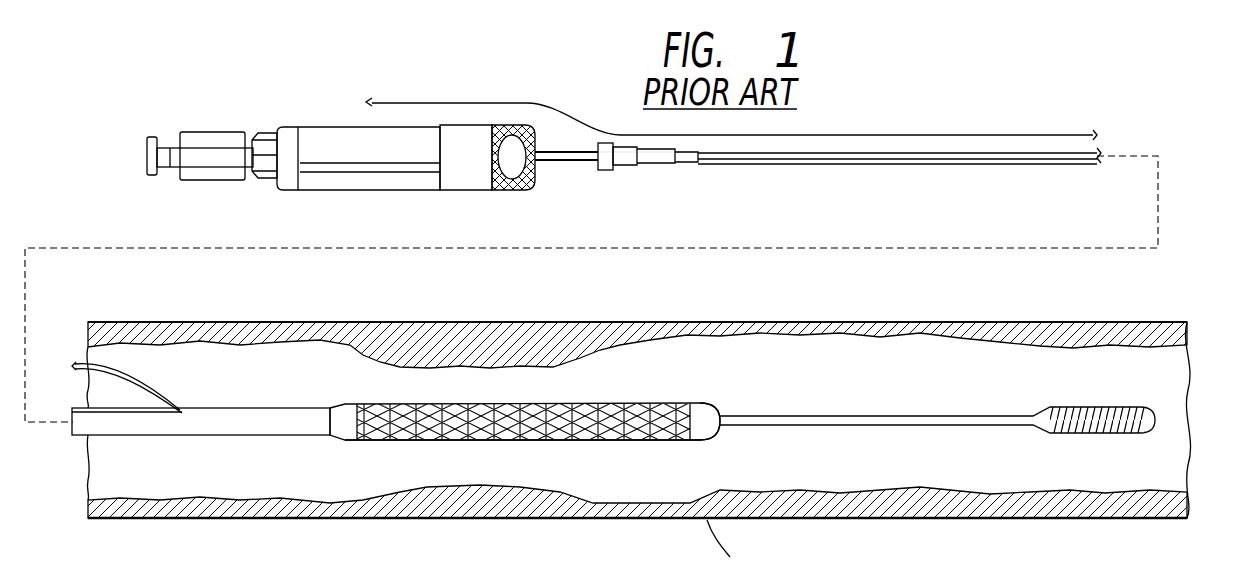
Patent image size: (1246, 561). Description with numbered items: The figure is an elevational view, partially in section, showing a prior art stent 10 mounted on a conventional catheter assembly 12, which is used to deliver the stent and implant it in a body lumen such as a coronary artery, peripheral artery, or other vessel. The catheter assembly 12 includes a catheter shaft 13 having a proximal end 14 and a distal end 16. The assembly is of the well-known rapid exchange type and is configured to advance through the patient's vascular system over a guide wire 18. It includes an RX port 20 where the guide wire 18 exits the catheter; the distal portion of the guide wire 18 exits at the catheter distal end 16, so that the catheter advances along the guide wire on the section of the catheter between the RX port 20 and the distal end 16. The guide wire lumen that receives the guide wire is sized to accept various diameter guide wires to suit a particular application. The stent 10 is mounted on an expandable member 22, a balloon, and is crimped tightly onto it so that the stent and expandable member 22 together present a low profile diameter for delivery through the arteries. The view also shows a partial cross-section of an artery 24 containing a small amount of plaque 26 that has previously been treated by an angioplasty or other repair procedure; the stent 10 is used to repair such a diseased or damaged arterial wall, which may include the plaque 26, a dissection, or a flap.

The stent 10 is at (355, 403).
The catheter assembly 12 is at (825, 178).
The catheter shaft 13 is at (760, 165).
The proximal end 14 is at (695, 165).
The distal end 16 is at (722, 402).
The guide wire 18 is at (96, 358).
The RX port 20 is at (182, 408).
The expandable member 22 is at (703, 442).
The artery 24 is at (578, 322).
The plaque 26 is at (565, 492).